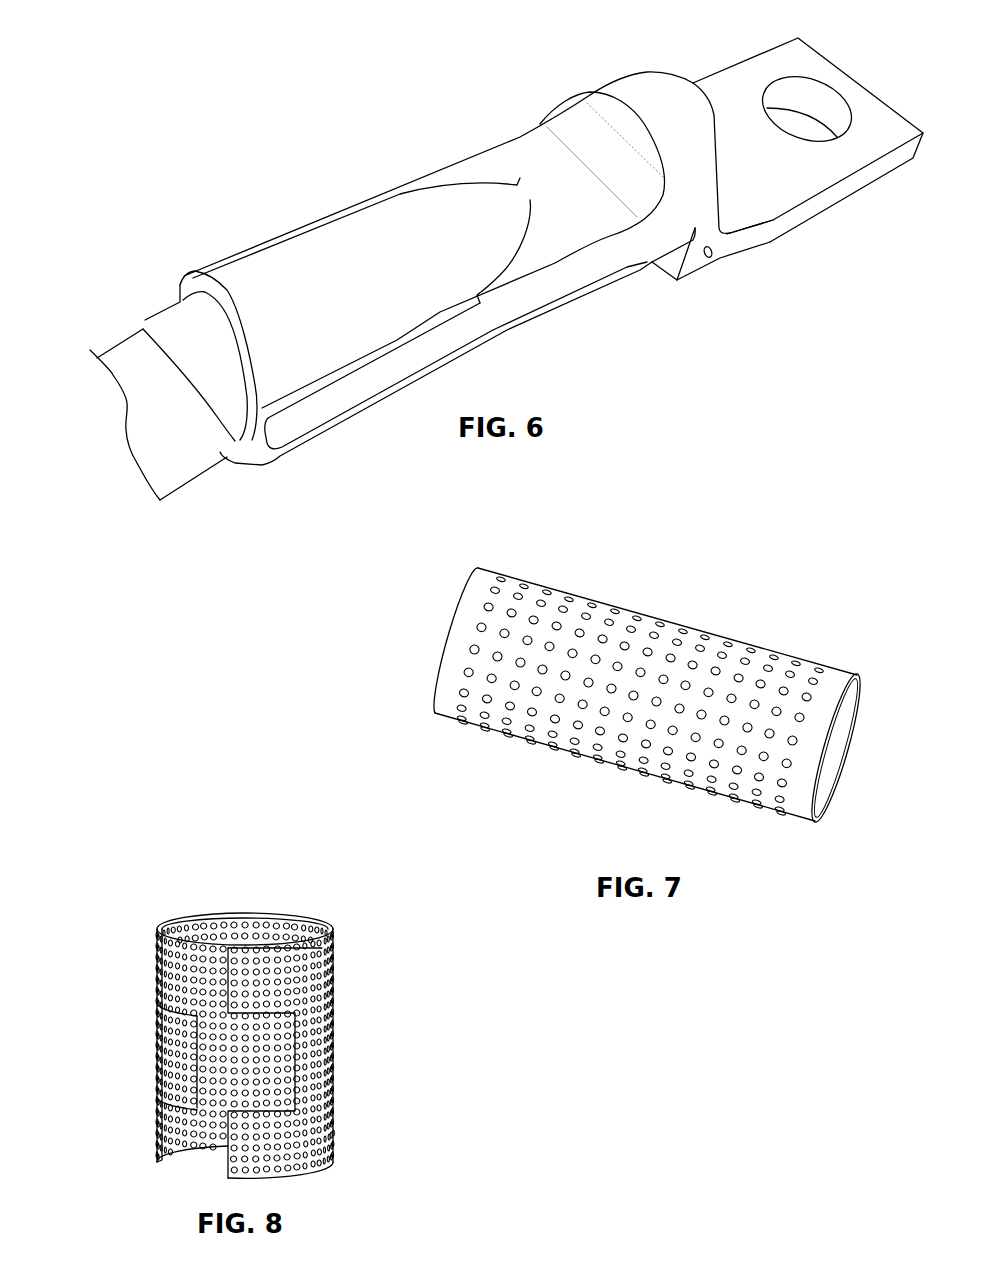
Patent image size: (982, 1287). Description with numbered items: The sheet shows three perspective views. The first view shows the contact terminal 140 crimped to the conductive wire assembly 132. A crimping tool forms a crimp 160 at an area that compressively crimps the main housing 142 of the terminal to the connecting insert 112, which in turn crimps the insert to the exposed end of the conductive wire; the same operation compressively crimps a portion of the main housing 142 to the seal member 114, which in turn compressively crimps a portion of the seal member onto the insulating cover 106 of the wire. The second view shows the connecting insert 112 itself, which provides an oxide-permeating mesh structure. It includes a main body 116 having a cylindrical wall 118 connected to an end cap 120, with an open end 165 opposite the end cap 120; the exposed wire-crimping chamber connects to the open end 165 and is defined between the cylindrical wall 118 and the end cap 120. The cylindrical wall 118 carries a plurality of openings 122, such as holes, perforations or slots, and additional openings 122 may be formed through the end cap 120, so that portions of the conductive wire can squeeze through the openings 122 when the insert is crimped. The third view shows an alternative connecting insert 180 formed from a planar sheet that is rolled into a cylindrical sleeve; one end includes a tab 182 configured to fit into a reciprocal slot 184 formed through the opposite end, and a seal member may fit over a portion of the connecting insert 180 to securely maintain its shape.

In FIG. 6, the insulating cover 106 is at (172, 457).
In FIG. 6, the seal member 114 is at (177, 310).
In FIG. 6, the conductive wire assembly 132 is at (238, 472).
In FIG. 6, the contact terminal 140 is at (618, 50).
In FIG. 6, the main housing 142 is at (317, 250).
In FIG. 6, the crimp 160 is at (522, 147).
In FIG. 7, the connecting insert 112 is at (632, 696).
In FIG. 7, the main body 116 is at (737, 805).
In FIG. 7, the cylindrical wall 118 is at (620, 607).
In FIG. 7, the end cap 120 is at (847, 740).
In FIG. 7, the openings 122 is at (656, 616).
In FIG. 7, the open end 165 is at (632, 696).
In FIG. 8, the connecting insert 180 is at (226, 1026).
In FIG. 8, the tab 182 is at (157, 1084).
In FIG. 8, the slot 184 is at (296, 1048).